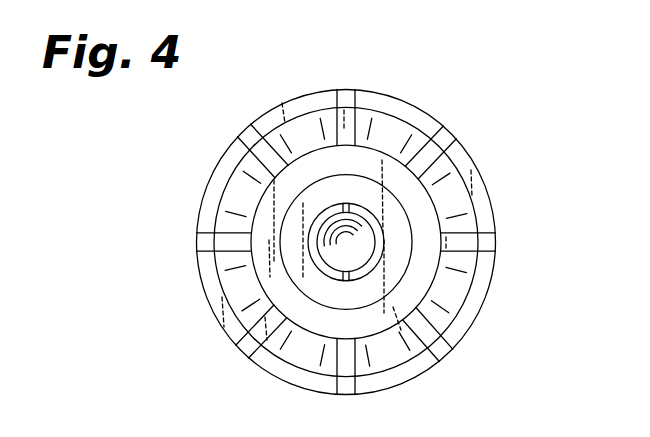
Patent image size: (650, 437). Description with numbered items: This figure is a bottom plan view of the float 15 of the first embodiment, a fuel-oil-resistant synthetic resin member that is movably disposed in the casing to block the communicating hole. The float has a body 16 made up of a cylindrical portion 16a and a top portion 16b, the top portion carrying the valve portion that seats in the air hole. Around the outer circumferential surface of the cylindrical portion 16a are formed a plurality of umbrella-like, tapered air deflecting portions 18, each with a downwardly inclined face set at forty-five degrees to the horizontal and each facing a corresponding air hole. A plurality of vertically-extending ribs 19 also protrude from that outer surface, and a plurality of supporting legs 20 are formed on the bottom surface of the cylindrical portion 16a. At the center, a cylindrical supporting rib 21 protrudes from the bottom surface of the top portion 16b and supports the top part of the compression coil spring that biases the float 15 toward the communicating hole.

The float 15 is at (437, 86).
The body 16 is at (430, 264).
The cylindrical portion 16a is at (346, 244).
The top portion 16b is at (415, 297).
The air deflecting portion 18 is at (375, 104).
The rib 19 is at (341, 78).
The supporting leg 20 is at (266, 178).
The cylindrical supporting rib 21 is at (377, 262).